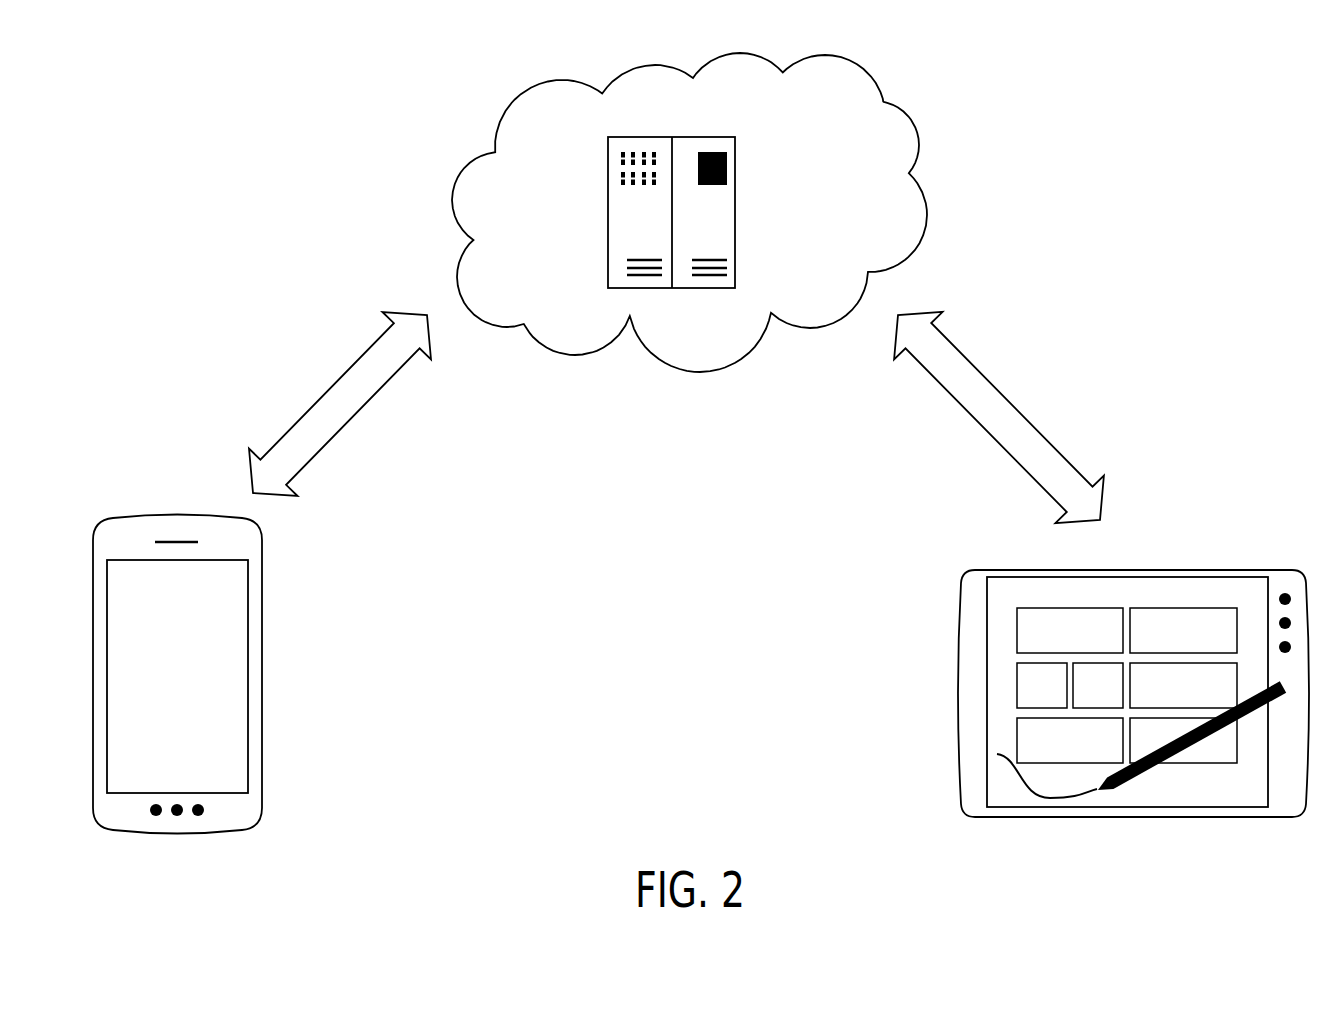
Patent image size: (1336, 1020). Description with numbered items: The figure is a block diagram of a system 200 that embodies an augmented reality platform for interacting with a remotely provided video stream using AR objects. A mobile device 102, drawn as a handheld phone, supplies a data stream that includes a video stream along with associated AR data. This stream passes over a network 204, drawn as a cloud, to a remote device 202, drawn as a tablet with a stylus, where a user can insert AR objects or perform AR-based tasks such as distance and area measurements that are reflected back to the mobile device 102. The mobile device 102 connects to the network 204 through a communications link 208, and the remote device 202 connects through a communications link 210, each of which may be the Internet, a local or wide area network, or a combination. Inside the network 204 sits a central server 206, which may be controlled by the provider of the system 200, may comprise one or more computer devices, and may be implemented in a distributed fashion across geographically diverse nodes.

The system 200 is at (275, 103).
The mobile device 102 is at (262, 635).
The remote device 202 is at (957, 667).
The network 204 is at (908, 112).
The central server 206 is at (647, 137).
The communications link 208 is at (340, 404).
The communications link 210 is at (999, 417).